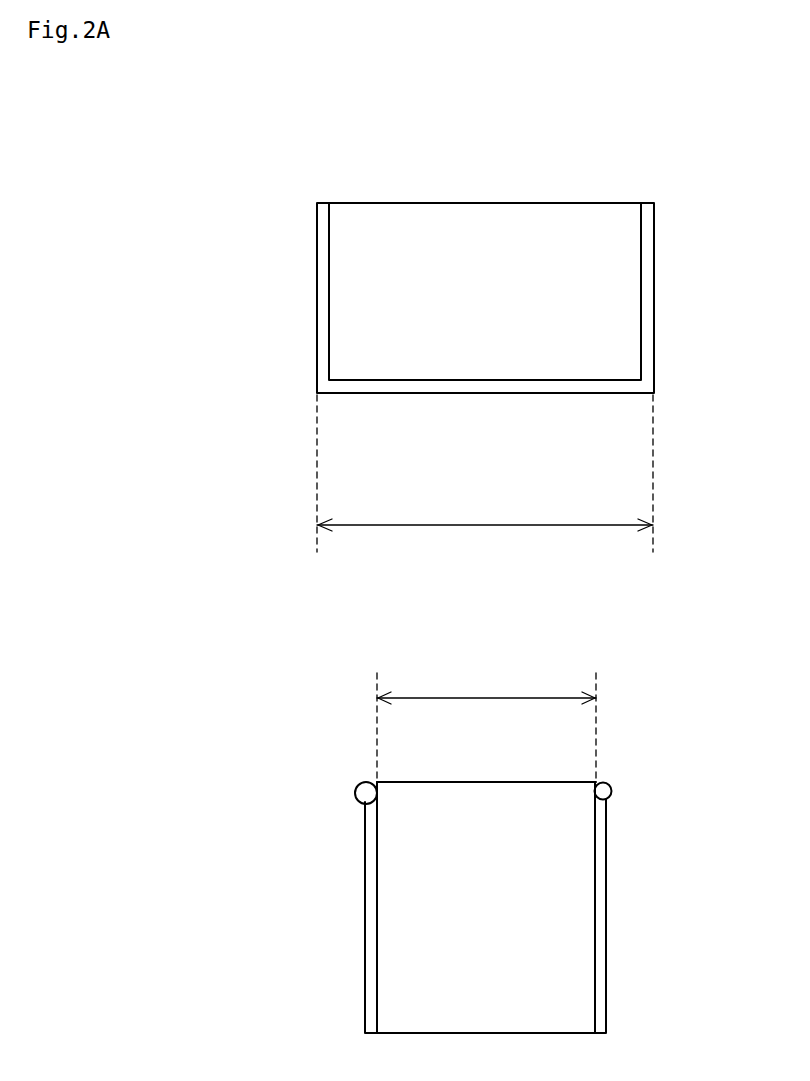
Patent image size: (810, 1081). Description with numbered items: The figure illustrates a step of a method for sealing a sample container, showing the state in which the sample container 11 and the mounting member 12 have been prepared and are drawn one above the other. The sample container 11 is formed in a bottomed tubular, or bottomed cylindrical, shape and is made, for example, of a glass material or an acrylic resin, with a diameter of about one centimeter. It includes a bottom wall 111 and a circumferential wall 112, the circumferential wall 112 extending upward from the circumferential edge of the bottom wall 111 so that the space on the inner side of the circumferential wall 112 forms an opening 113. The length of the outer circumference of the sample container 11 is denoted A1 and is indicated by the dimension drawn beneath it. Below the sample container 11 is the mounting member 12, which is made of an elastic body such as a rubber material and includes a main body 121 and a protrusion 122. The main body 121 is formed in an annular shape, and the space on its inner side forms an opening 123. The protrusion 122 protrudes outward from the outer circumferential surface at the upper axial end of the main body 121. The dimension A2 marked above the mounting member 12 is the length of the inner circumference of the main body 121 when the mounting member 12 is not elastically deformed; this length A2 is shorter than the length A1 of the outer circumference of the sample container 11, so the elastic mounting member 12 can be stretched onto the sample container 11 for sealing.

The sample container 11 is at (657, 317).
The bottom wall 111 is at (561, 393).
The circumferential wall 112 is at (648, 240).
The opening 113 is at (332, 227).
The length of the outer circumference of the sample container A1 is at (473, 527).
The mounting member 12 is at (610, 866).
The main body 121 is at (602, 967).
The protrusion 122 is at (612, 793).
The opening 123 is at (378, 818).
The length of the inner circumference of the main body A2 is at (483, 697).